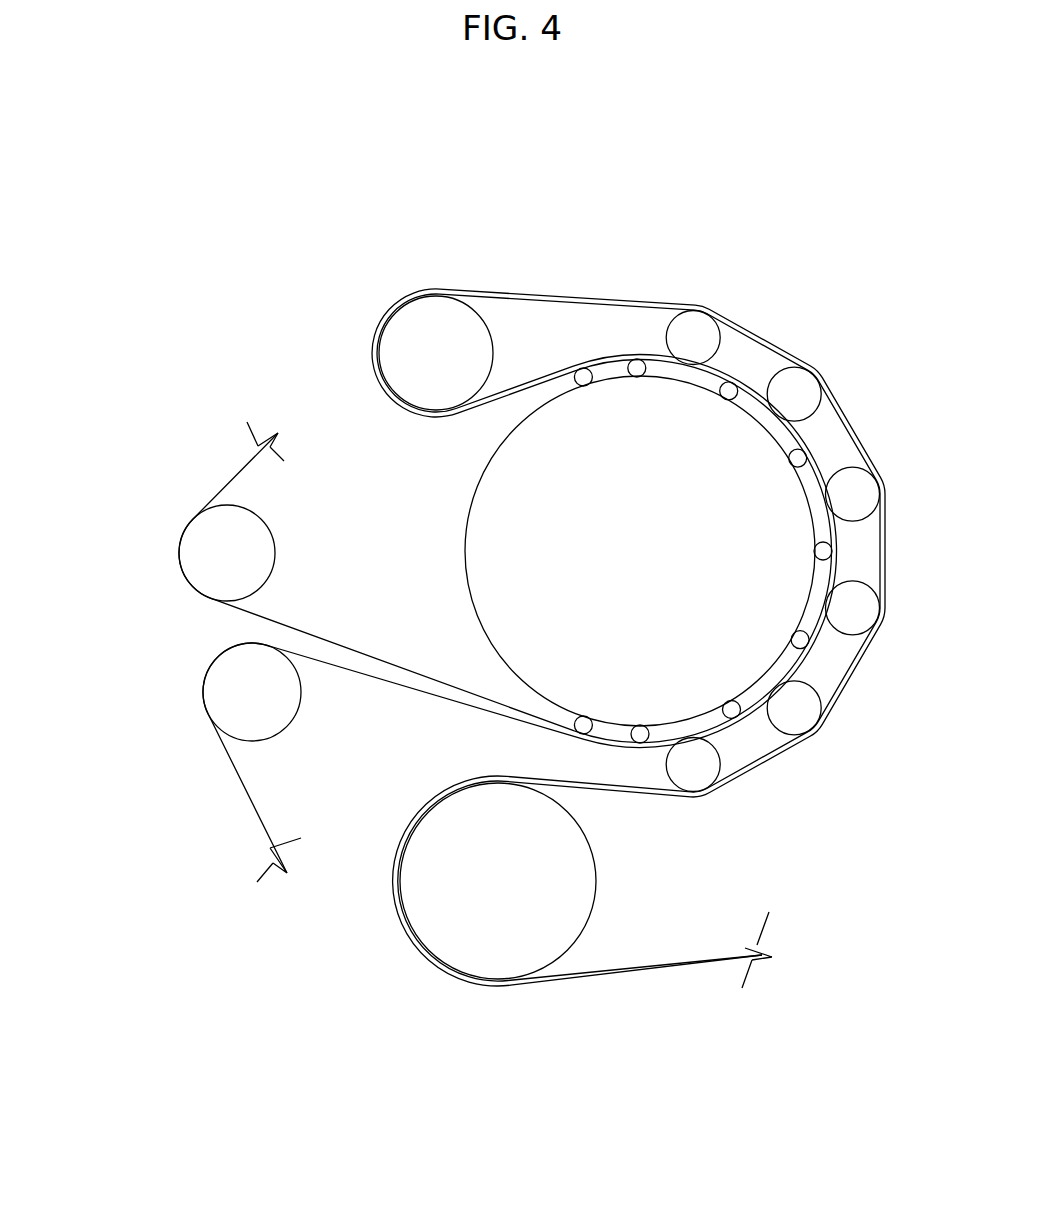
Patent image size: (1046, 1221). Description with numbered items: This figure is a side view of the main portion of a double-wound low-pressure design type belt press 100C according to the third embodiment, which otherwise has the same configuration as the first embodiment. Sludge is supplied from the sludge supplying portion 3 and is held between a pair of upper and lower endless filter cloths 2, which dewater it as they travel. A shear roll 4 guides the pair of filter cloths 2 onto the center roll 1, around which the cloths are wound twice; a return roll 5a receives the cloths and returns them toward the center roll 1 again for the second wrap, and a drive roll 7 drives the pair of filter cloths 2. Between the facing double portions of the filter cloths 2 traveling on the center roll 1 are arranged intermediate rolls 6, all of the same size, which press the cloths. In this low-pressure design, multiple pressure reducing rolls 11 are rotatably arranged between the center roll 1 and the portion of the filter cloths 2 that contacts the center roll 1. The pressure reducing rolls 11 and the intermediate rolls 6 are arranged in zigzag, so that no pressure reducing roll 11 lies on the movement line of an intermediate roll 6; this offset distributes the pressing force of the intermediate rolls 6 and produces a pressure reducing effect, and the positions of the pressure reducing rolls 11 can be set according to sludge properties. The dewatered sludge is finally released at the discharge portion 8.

The belt press 100C is at (733, 182).
The center roll 1 is at (607, 403).
The pressure reducing rolls 11 is at (812, 549).
The intermediate rolls 6 is at (806, 718).
The return roll 5a is at (418, 315).
The shear roll 4 is at (488, 960).
The drive roll 7 is at (264, 545).
The filter cloths 2 is at (672, 962).
The sludge supplying portion 3 is at (803, 946).
The discharge portion 8 is at (150, 623).